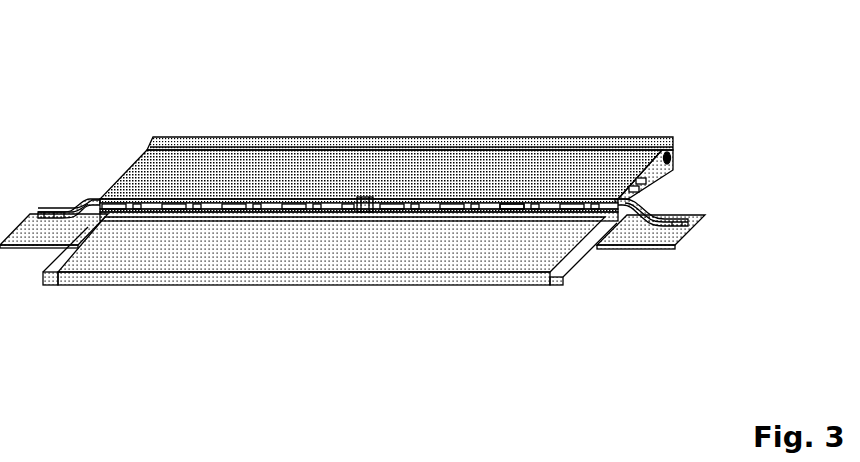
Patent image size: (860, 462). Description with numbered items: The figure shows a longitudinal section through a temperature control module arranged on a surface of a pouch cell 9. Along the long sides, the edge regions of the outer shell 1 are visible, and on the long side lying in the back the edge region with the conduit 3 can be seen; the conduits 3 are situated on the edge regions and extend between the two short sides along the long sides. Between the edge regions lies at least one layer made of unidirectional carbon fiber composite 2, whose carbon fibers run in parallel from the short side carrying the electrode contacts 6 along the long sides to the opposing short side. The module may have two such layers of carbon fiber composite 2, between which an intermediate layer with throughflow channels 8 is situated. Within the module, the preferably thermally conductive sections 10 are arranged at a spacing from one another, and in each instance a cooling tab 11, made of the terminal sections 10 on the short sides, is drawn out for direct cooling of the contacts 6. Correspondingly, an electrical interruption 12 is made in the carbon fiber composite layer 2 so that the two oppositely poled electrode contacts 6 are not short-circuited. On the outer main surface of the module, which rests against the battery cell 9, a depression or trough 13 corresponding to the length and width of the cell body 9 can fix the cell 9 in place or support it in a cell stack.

The outer shell 1 is at (165, 212).
The unidirectional carbon fiber composite 2 is at (243, 210).
The conduit 3 is at (677, 147).
The electrode contact 6 is at (707, 218).
The throughflow channel 8 is at (510, 207).
The pouch cell 9 is at (348, 286).
The thermally conductive section 10 is at (173, 190).
The cooling tab 11 is at (660, 213).
The electrical interruption 12 is at (360, 200).
The trough 13 is at (625, 147).